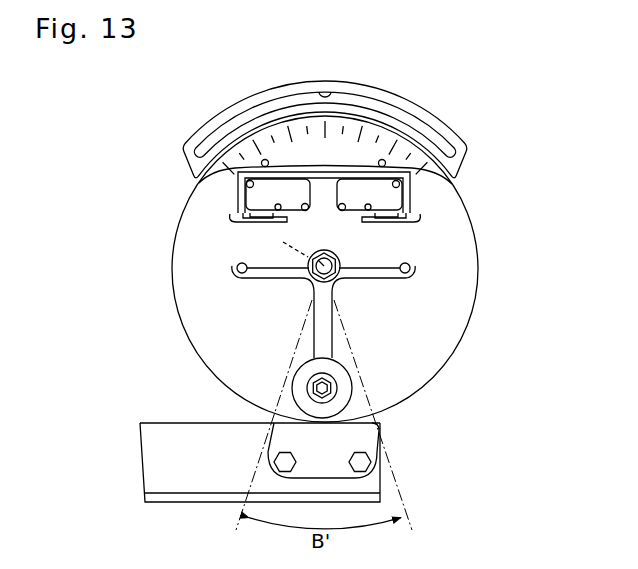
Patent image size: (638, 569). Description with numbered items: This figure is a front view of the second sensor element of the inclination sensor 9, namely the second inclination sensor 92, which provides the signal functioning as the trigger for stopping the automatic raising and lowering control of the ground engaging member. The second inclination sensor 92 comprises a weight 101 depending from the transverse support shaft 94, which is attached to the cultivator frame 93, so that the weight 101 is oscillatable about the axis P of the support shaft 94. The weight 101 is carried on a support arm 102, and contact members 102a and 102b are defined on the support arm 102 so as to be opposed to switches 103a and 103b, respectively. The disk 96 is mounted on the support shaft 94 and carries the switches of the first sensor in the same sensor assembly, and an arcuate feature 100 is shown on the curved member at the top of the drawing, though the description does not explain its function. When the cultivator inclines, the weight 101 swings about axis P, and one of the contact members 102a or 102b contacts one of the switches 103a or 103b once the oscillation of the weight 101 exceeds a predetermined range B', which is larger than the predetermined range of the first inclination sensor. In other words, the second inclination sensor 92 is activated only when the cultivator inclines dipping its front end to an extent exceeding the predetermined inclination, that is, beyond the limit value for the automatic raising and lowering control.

The inclination sensor 9 is at (325, 107).
The arcuate slot 100 is at (208, 131).
The disk 96 is at (195, 193).
The second inclination sensor 92 is at (245, 315).
The switch 103a is at (243, 200).
The switch 103b is at (392, 203).
The support arm 102 is at (328, 310).
The contact member 102a is at (245, 280).
The contact member 102b is at (405, 282).
The transverse support shaft 94 is at (316, 281).
The weight 101 is at (350, 386).
The cultivator frame 93 is at (357, 438).